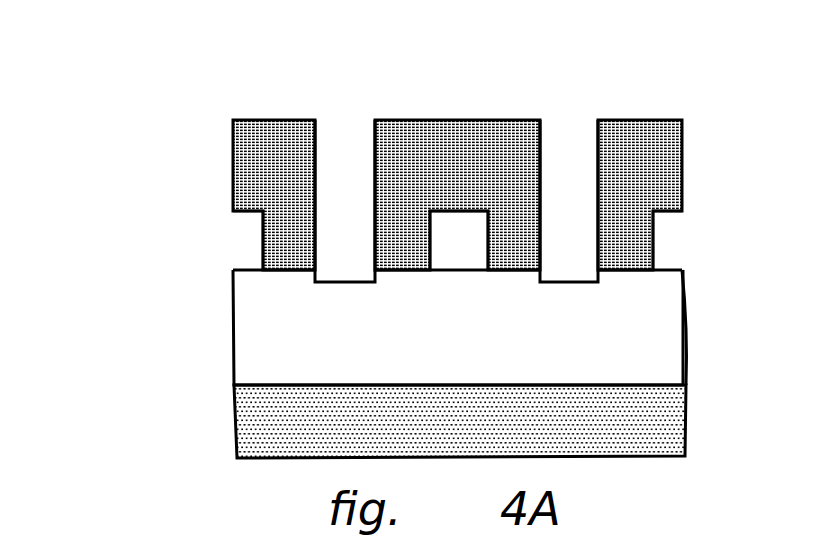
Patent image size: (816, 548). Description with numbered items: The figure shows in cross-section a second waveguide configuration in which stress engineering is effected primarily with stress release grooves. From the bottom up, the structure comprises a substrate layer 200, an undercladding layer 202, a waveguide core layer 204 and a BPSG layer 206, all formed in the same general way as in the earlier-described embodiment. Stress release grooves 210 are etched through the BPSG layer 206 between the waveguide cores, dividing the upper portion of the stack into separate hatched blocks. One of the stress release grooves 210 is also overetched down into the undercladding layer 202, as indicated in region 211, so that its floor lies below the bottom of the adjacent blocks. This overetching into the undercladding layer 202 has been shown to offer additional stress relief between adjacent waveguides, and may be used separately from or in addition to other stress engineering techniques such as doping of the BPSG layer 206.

The substrate layer 200 is at (235, 430).
The undercladding layer 202 is at (233, 320).
The waveguide core layer 204 is at (233, 246).
The BPSG layer 206 is at (233, 172).
The stress release grooves 210 is at (341, 120).
The overetched region 211 is at (548, 272).